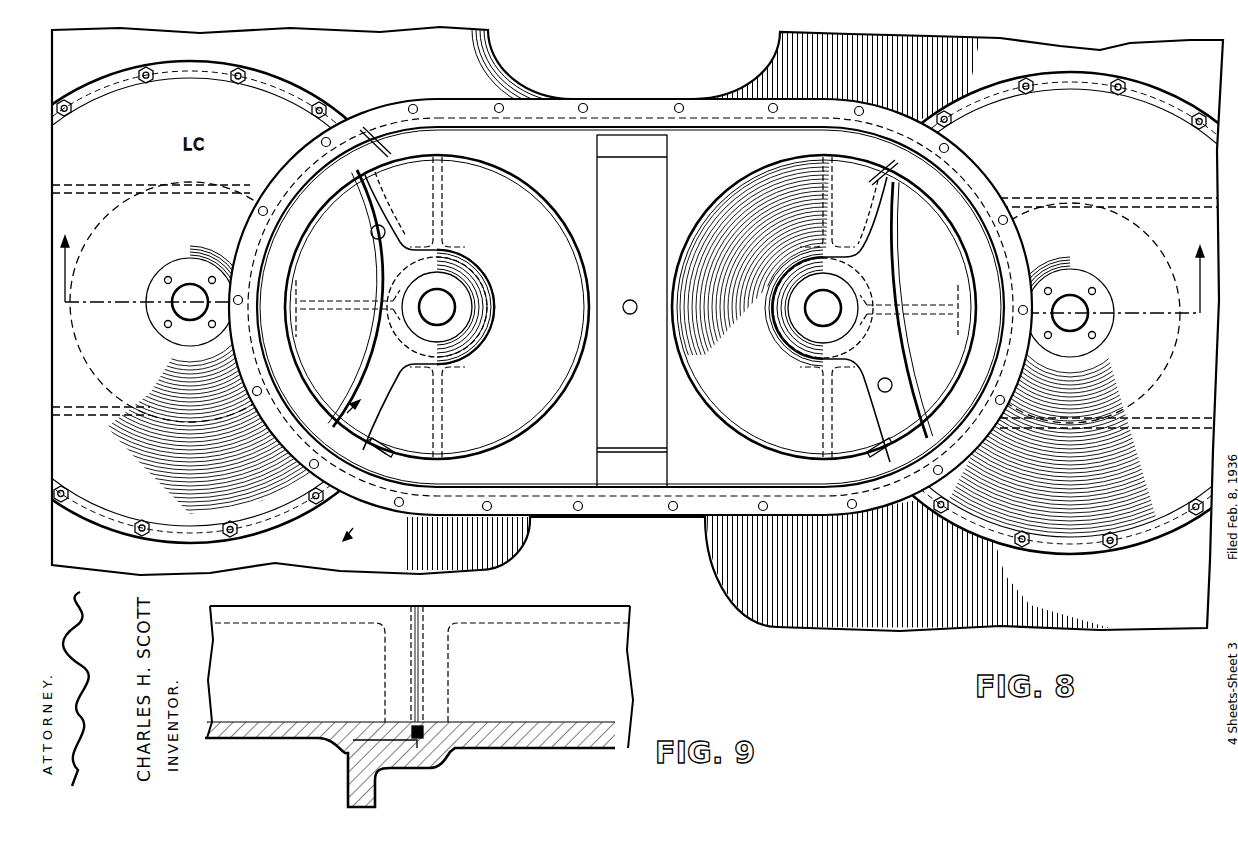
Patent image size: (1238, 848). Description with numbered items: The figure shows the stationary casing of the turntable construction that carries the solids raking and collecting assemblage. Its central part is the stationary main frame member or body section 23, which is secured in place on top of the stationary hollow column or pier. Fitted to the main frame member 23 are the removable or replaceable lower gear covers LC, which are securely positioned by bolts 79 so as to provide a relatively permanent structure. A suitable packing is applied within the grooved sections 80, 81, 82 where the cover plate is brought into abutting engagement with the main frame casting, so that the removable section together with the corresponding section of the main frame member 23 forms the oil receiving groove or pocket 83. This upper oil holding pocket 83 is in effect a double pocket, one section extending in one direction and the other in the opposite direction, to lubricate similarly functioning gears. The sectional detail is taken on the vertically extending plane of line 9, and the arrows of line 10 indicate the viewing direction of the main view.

In FIG. 8, the stationary main frame member or body section 23 is at (172, 590).
In FIG. 8, the bolts 79 is at (240, 72).
In FIG. 8, the grooved section 80 is at (378, 447).
In FIG. 8, the grooved section 81 is at (360, 452).
In FIG. 9, the grooved section 81 is at (443, 765).
In FIG. 8, the grooved section 82 is at (365, 490).
In FIG. 8, the oil receiving groove or pocket 83 is at (395, 146).
In FIG. 8, the section line 9— 9 is at (353, 470).
In FIG. 8, the section line 10— 10 is at (634, 259).